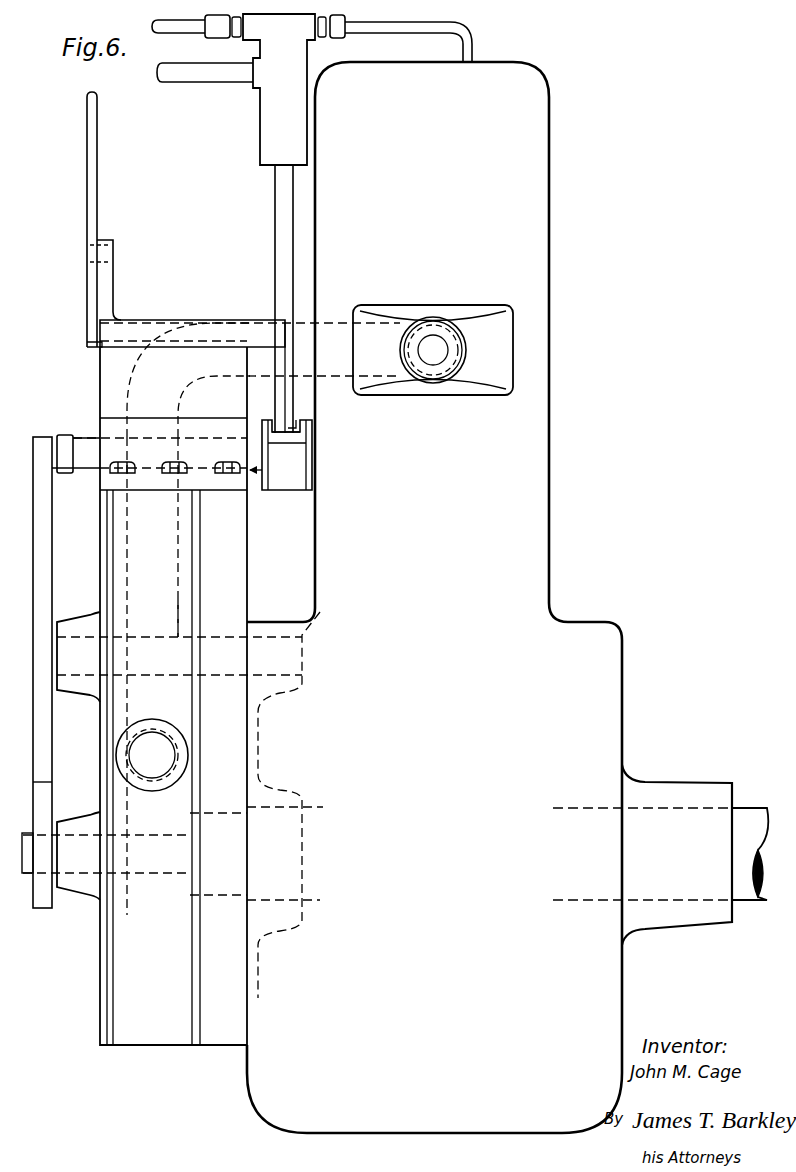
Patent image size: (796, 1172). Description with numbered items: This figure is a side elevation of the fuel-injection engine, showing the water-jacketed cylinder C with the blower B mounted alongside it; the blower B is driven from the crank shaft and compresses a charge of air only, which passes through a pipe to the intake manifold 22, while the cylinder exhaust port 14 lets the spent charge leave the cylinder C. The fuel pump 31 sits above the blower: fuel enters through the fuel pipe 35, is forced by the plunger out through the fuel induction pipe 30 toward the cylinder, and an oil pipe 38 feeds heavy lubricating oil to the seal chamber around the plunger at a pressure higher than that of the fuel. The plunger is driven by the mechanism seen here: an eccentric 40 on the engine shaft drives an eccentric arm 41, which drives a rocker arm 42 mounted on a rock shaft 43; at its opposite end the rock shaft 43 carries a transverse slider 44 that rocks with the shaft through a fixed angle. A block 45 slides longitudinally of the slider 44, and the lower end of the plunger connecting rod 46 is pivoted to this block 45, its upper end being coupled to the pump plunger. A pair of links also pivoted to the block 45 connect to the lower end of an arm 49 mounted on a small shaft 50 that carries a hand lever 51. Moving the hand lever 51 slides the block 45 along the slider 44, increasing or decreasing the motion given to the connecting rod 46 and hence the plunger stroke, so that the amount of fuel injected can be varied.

The cylinder exhaust port 14 is at (440, 347).
The intake manifold 22 is at (180, 607).
The fuel induction pipe 30 is at (459, 26).
The fuel pump 31 is at (296, 60).
The fuel pipe 35 is at (181, 24).
The oil pipe 38 is at (205, 72).
The eccentric 40 is at (53, 803).
The eccentric arm 41 is at (40, 590).
The rocker arm 42 is at (62, 435).
The rock shaft 43 is at (197, 437).
The transverse slider 44 is at (314, 468).
The block 45 is at (294, 428).
The plunger connecting rod 46 is at (280, 250).
The arm 49 is at (284, 387).
The small shaft 50 is at (154, 340).
The hand lever 51 is at (91, 172).
The blower B is at (140, 938).
The cylinder C is at (507, 597).